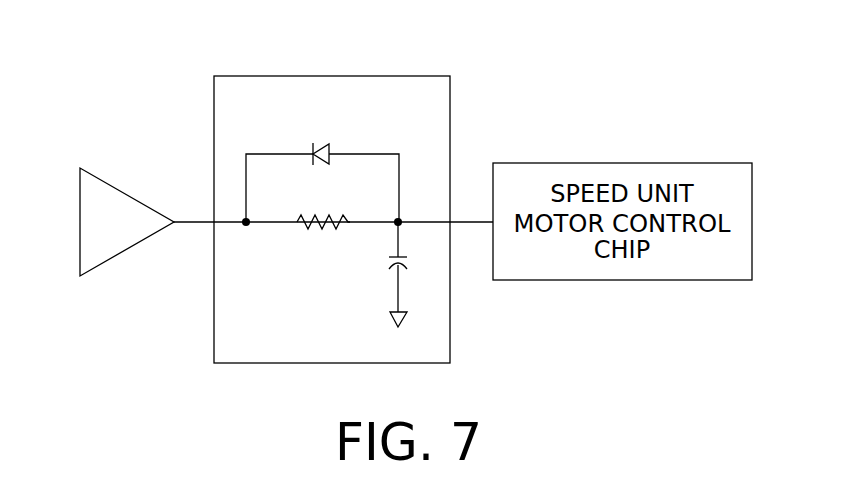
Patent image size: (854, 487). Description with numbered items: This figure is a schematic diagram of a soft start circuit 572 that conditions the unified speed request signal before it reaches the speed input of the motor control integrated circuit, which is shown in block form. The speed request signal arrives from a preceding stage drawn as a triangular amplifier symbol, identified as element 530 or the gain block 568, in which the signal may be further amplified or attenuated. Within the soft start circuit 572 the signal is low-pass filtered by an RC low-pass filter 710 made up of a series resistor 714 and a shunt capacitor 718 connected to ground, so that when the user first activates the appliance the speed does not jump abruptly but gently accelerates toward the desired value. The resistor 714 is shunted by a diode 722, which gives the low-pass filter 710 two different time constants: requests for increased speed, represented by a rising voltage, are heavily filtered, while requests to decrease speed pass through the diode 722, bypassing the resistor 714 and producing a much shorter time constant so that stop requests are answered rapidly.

The amplifier / driver output 530 is at (104, 276).
The gain block 568 is at (118, 252).
The soft start circuit 572 is at (332, 75).
The RC low-pass filter 710 is at (368, 253).
The resistor 714 is at (328, 230).
The capacitor 718 is at (397, 283).
The diode 722 is at (352, 154).